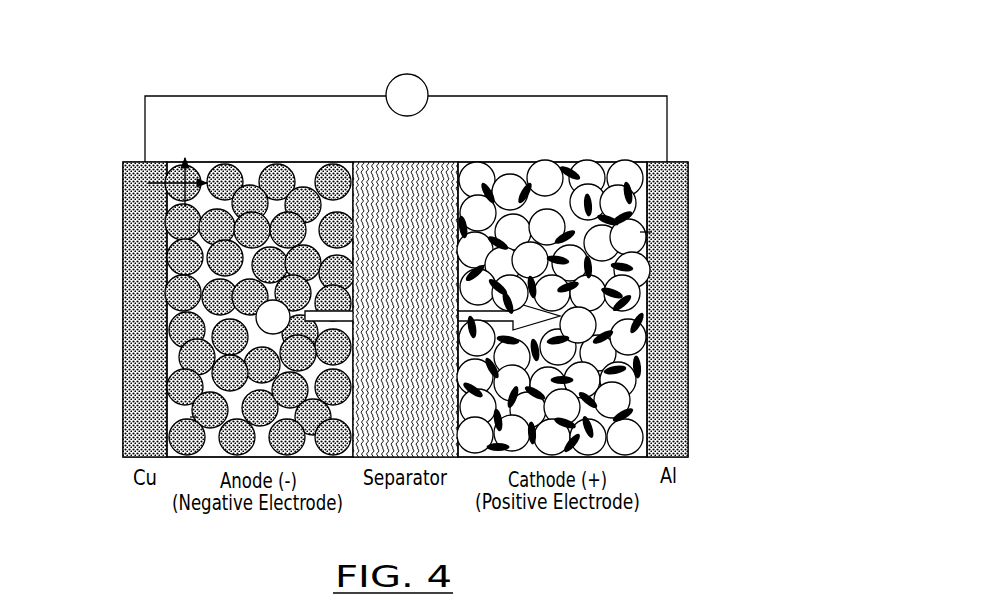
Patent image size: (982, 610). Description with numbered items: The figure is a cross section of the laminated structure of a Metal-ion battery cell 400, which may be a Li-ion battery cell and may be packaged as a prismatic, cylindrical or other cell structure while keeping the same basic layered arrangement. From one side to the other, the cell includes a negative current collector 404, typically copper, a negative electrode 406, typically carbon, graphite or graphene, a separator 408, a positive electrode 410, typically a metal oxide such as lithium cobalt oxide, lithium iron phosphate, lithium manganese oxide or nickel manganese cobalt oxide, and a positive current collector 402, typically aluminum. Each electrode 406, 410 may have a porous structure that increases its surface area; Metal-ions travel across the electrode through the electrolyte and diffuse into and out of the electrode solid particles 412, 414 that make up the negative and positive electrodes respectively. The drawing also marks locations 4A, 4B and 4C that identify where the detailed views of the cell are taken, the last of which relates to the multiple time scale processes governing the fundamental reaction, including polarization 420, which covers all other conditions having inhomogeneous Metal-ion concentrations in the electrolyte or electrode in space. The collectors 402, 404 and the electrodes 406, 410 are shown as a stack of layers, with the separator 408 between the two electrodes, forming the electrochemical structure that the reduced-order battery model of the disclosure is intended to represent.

The Metal-ion battery cell 400 is at (710, 120).
The positive current collector 402 is at (690, 252).
The negative current collector 404 is at (123, 267).
The negative electrode 406 is at (353, 143).
The separator 408 is at (357, 143).
The positive electrode 410 is at (647, 143).
The electrode solid particles 412 is at (167, 258).
The electrode solid particles 414 is at (637, 388).
The polarization 420 is at (647, 515).
The section view 4A location 4A is at (168, 168).
The section view 4B location 4B is at (652, 231).
The section view 4C location 4C is at (193, 417).